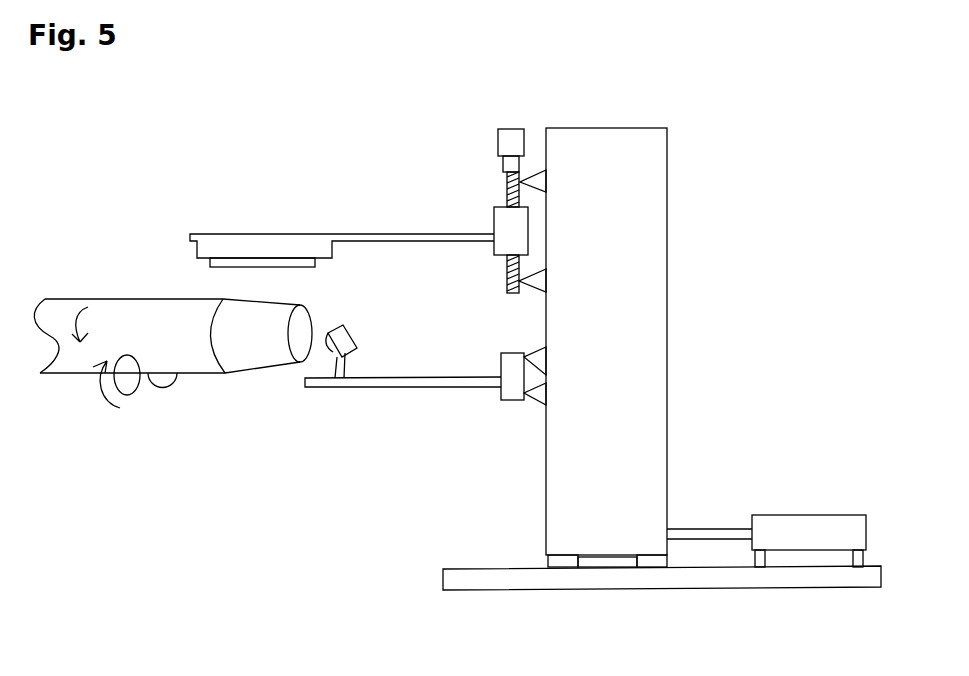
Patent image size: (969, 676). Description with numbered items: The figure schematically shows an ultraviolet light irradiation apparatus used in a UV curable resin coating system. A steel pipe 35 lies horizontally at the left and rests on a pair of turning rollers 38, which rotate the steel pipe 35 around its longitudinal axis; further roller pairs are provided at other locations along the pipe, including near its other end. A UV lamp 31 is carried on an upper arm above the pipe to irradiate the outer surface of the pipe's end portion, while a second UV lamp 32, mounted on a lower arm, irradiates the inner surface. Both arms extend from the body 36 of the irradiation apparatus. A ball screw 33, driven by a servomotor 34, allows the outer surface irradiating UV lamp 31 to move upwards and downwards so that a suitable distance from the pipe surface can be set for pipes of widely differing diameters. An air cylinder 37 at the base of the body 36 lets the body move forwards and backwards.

The UV lamp 31 is at (208, 262).
The UV lamp 32 is at (358, 330).
The ball screw 33 is at (490, 218).
The servomotor 34 is at (502, 163).
The steel pipe 35 is at (108, 313).
The body 36 is at (593, 347).
The air cylinder 37 is at (766, 525).
The turning rollers 38 is at (132, 397).